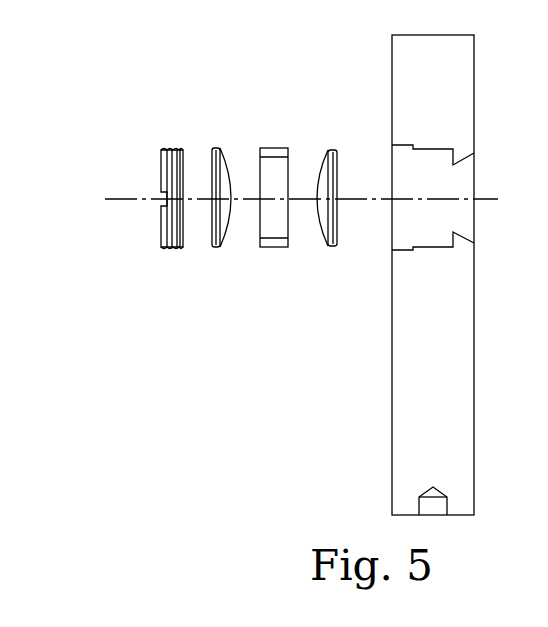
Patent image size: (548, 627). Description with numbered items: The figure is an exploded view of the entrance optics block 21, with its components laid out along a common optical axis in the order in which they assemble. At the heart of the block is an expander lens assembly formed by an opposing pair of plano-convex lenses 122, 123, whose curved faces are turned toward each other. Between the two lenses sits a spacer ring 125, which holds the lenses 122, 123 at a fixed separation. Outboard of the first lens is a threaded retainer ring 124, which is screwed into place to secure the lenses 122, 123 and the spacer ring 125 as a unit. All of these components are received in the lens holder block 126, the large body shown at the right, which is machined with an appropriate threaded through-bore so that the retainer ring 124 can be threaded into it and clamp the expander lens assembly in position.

The entrance optics block 21 is at (111, 82).
The plano-convex lens 122 is at (217, 149).
The plano-convex lens 123 is at (331, 141).
The threaded retainer ring 124 is at (173, 250).
The spacer ring 125 is at (279, 249).
The lens holder block 126 is at (390, 467).